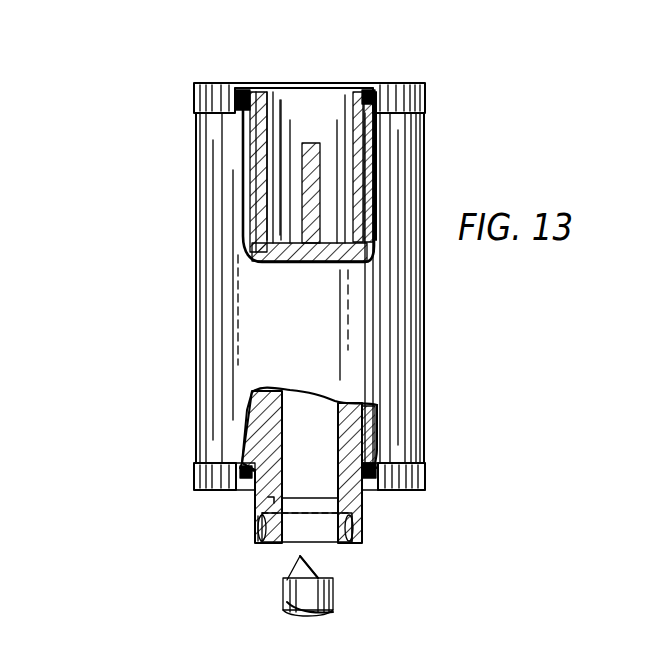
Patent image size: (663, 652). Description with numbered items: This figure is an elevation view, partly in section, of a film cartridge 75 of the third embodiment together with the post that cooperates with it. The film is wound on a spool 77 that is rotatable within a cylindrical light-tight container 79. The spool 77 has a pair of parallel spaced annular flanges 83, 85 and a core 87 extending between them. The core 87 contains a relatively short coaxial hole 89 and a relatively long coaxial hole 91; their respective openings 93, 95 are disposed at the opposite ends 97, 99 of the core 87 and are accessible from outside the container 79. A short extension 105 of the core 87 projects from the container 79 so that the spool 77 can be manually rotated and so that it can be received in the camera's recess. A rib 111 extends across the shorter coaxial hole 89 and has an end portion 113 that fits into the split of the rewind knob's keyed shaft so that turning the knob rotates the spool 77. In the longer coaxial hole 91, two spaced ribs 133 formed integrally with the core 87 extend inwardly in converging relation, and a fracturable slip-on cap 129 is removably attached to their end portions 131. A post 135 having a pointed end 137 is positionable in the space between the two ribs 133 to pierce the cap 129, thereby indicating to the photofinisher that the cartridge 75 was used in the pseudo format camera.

The film cartridge 75 is at (265, 286).
The spool 77 is at (273, 166).
The cylindrical light-tight container 79 is at (424, 312).
The annular flange 83 is at (375, 93).
The annular flange 85 is at (370, 485).
The core 87 is at (344, 220).
The short coaxial hole 89 is at (262, 93).
The long coaxial hole 91 is at (306, 486).
The end opening 93 is at (286, 88).
The end opening 95 is at (333, 540).
The core end 97 is at (366, 90).
The core end 99 is at (414, 490).
The short extension 105 is at (255, 504).
The rib 111 is at (282, 181).
The rib end portion 113 is at (305, 143).
The slip-on cap 129 is at (308, 506).
The rib end portion 131 is at (264, 543).
The spaced rib 133 is at (340, 421).
The post 135 is at (334, 598).
The pointed end 137 is at (298, 556).